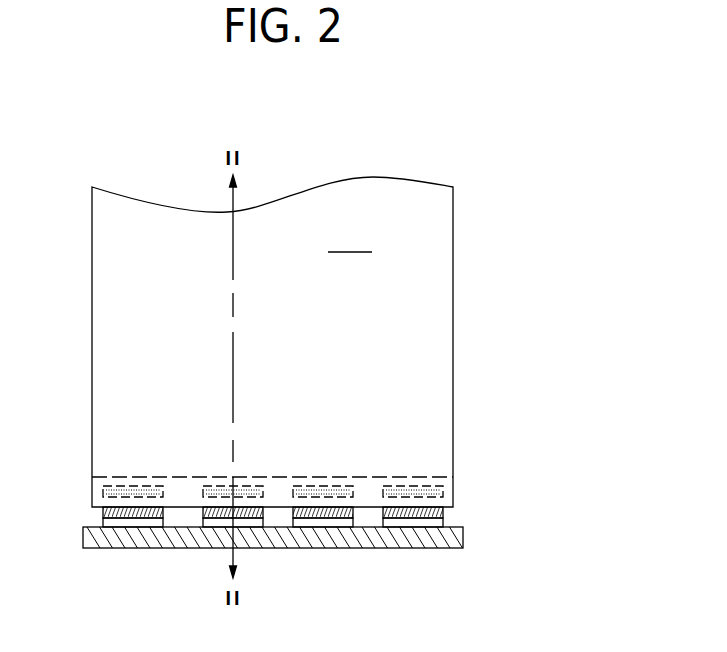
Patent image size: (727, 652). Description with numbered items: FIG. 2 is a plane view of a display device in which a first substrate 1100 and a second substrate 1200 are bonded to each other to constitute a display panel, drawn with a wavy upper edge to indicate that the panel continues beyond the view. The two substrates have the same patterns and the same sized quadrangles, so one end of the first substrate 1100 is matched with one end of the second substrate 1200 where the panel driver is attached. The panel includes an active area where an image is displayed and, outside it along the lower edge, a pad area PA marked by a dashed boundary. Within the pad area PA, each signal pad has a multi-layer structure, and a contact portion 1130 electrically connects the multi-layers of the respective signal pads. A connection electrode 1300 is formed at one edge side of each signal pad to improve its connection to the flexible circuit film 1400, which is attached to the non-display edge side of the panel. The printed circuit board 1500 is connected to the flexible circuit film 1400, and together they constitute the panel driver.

The first substrate 1100 is at (351, 342).
The second substrate 1200 is at (454, 347).
The pad area PA is at (454, 493).
The contact portion 1130 is at (138, 492).
The connection electrode 1300 is at (330, 512).
The flexible circuit film 1400 is at (415, 523).
The printed circuit board 1500 is at (463, 538).